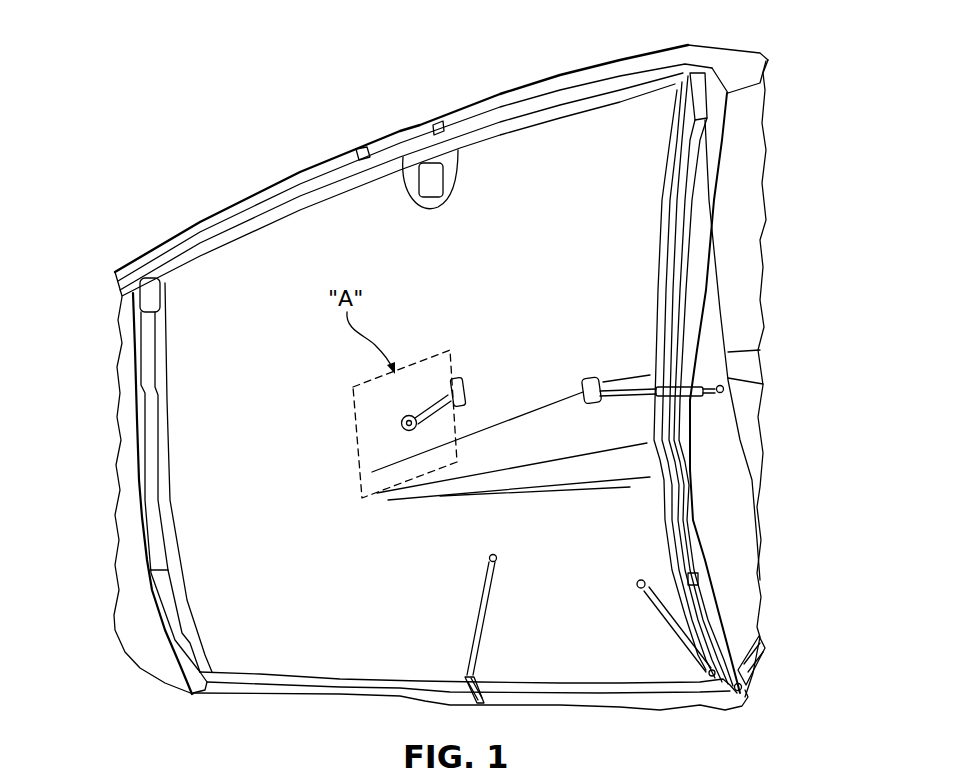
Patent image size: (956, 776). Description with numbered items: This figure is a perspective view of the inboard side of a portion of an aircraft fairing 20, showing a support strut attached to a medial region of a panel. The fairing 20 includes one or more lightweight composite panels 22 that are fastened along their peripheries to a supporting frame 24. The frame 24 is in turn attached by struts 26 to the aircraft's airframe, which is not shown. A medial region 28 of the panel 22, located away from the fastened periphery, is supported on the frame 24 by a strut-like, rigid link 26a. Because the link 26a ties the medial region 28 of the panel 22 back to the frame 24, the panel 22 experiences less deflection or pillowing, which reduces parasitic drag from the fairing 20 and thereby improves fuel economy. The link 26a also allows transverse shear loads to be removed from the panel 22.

The aircraft fairing 20 is at (195, 168).
The composite panel 22 is at (537, 160).
The supporting frame 24 is at (682, 223).
The struts 26 is at (706, 390).
The rigid link 26a is at (430, 403).
The medial region 28 is at (468, 344).